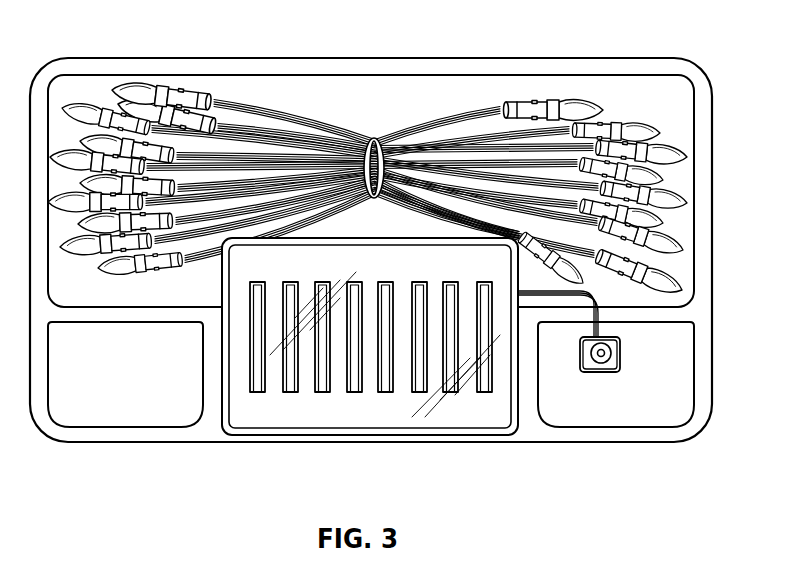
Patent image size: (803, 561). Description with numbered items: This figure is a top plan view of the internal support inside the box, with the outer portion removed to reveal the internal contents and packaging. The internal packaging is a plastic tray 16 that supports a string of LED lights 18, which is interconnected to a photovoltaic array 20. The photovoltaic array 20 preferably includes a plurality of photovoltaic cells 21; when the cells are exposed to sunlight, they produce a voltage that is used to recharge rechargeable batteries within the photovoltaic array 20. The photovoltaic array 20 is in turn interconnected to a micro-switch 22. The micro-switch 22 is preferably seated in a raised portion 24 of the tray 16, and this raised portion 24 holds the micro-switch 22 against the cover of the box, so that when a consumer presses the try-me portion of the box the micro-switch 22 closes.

The plastic tray 16 is at (712, 231).
The string of LED lights 18 is at (431, 50).
The photovoltaic array 20 is at (430, 463).
The photovoltaic cells 21 is at (310, 415).
The micro-switch 22 is at (632, 350).
The raised portion 24 is at (670, 395).